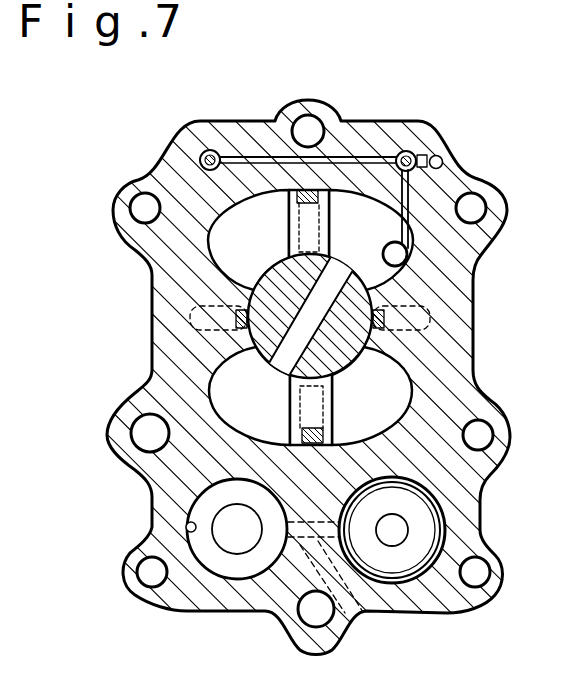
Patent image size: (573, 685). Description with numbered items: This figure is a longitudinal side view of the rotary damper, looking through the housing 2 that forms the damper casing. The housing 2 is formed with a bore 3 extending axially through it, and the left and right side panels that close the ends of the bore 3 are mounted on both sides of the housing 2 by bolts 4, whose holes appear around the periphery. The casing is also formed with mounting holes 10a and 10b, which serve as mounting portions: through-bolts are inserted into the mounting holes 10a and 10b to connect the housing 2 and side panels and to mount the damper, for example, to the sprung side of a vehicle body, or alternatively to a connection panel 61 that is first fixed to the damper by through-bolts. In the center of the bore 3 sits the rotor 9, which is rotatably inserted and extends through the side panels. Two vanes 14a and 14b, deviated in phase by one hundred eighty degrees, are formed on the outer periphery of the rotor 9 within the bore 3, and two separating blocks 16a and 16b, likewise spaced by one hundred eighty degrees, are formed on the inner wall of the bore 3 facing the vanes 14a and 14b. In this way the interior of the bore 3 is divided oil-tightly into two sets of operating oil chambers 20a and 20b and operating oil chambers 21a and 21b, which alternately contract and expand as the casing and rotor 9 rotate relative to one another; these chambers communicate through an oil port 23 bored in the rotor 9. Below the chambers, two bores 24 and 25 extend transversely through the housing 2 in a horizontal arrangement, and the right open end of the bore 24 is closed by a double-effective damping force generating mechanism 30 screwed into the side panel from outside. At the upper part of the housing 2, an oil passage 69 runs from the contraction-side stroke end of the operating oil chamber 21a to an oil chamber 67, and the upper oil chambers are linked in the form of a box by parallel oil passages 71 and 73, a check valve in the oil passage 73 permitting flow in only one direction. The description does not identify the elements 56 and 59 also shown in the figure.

The housing 2 is at (165, 497).
The bore 3 is at (158, 284).
The bolts 4 is at (320, 118).
The rotor 9 is at (305, 311).
The mounting hole 10a is at (301, 622).
The mounting hole 10b is at (131, 436).
The vane 14a is at (288, 217).
The vane 14b is at (290, 415).
The separating block 16a is at (236, 326).
The separating block 16b is at (386, 325).
The operating oil chamber 20a is at (212, 246).
The operating oil chamber 20b is at (400, 372).
The operating oil chamber 21a is at (372, 292).
The operating oil chamber 21b is at (235, 352).
The oil port 23 is at (333, 268).
The bore 24 is at (418, 506).
The bore 25 is at (186, 528).
The double-effective damping force generating mechanism 30 is at (419, 585).
The passage 56 is at (366, 615).
The port bore 59 is at (235, 572).
The connection panel 61 is at (410, 254).
The oil chamber 67 is at (407, 150).
The oil passage 69 is at (444, 170).
The oil passage 71 is at (243, 152).
The oil passage 73 is at (205, 150).